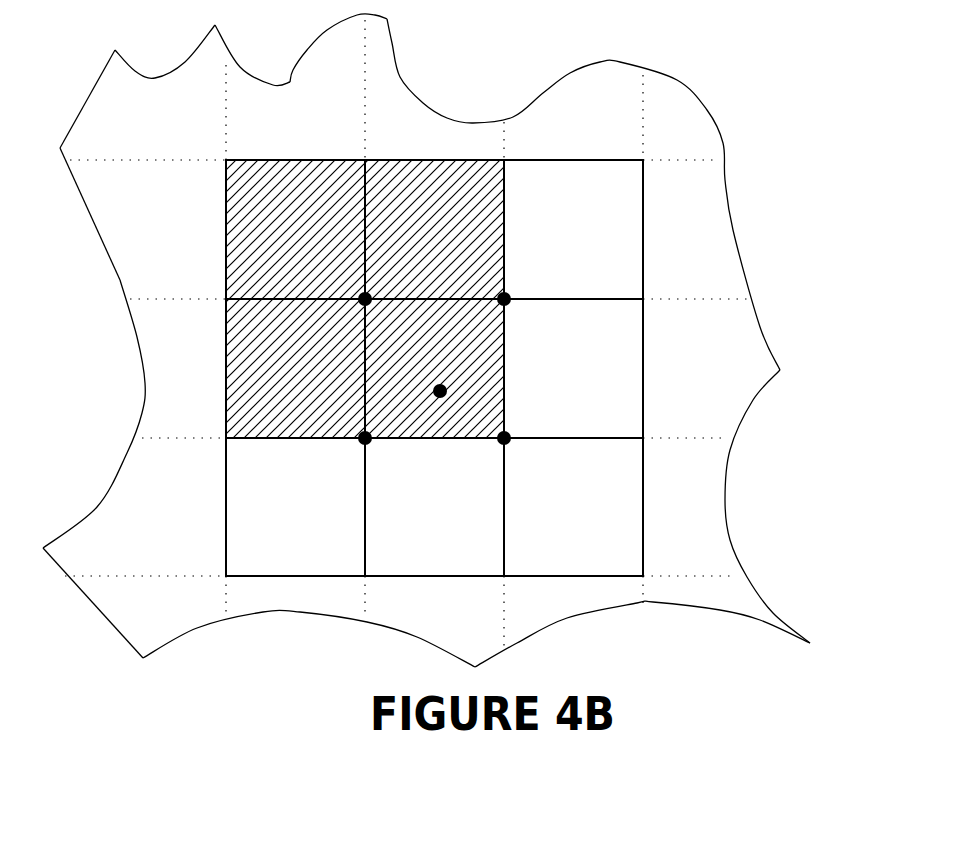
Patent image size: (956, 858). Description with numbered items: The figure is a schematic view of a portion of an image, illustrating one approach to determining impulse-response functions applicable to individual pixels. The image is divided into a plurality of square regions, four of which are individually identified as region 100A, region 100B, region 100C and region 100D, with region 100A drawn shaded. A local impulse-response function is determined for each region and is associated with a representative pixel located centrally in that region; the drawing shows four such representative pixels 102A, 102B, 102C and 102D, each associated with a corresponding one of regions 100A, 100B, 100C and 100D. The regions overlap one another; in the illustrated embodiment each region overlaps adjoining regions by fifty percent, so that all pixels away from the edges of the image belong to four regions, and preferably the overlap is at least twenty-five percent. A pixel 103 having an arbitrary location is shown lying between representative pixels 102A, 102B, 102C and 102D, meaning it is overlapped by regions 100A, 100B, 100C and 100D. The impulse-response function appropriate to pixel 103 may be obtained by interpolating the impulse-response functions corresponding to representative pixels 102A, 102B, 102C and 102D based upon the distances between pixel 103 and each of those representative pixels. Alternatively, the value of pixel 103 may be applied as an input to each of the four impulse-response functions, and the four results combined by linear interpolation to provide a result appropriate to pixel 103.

The region 100A is at (303, 160).
The region 100B is at (535, 160).
The region 100C is at (643, 521).
The region 100D is at (227, 550).
The representative pixel 102A is at (365, 299).
The representative pixel 102B is at (504, 299).
The representative pixel 102C is at (504, 438).
The representative pixel 102D is at (365, 438).
The pixel 103 is at (440, 391).